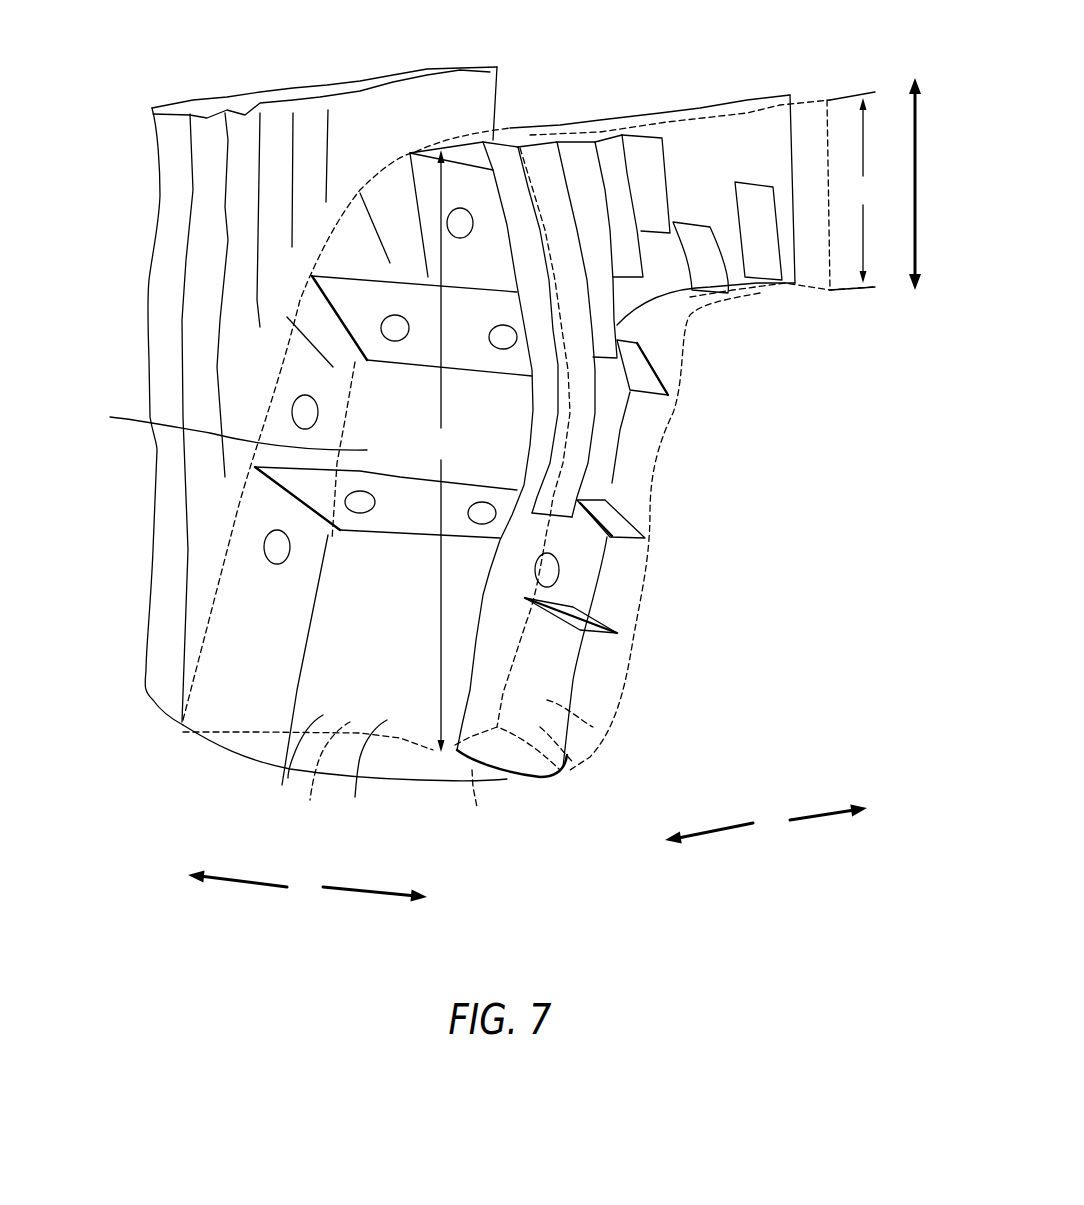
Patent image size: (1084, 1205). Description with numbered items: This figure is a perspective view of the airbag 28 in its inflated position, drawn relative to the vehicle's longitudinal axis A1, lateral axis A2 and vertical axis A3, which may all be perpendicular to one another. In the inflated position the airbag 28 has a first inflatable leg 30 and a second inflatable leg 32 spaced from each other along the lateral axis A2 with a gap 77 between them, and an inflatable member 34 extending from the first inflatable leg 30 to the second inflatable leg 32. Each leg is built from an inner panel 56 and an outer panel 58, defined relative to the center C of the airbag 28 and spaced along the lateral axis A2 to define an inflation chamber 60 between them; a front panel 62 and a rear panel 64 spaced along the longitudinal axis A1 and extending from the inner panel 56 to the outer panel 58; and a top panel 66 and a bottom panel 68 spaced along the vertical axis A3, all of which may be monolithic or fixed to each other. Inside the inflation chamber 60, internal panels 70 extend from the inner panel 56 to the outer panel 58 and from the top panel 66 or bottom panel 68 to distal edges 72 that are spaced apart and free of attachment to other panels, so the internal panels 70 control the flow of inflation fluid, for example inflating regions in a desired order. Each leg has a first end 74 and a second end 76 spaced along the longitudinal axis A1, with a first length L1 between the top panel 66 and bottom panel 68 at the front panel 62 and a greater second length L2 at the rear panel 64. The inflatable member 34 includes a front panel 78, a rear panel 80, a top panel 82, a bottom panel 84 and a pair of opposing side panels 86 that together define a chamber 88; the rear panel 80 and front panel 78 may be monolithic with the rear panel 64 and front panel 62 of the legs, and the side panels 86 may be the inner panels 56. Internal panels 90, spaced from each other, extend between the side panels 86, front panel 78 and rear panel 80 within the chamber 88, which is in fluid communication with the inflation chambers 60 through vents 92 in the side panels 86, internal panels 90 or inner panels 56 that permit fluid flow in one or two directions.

The airbag 28 is at (108, 150).
The first inflatable leg 30 is at (163, 267).
The second inflatable leg 32 is at (593, 727).
The inflatable member 34 is at (227, 712).
The inner panel 56 is at (200, 350).
The outer panel 58 is at (150, 318).
The inflation chamber 60 is at (165, 518).
The front panel 62 is at (500, 82).
The rear panel 64 is at (167, 480).
The top panel 66 is at (257, 100).
The bottom panel 68 is at (673, 353).
The internal panels 70 is at (542, 160).
The distal edges 72 is at (693, 220).
The first end 74 is at (490, 67).
The second end 76 is at (170, 110).
The gap 77 is at (468, 103).
The front panel 78 is at (319, 772).
The rear panel 80 is at (363, 774).
The top panel 82 is at (508, 121).
The bottom panel 84 is at (243, 743).
The side panels 86 is at (267, 677).
The chamber 88 is at (298, 674).
The internal panels 90 is at (427, 352).
The vents 92 is at (465, 238).
The center C is at (231, 424).
The first length L1 is at (855, 191).
The second length L2 is at (446, 451).
The longitudinal axis A1 is at (766, 824).
The lateral axis A2 is at (307, 886).
The vertical axis A3 is at (920, 184).